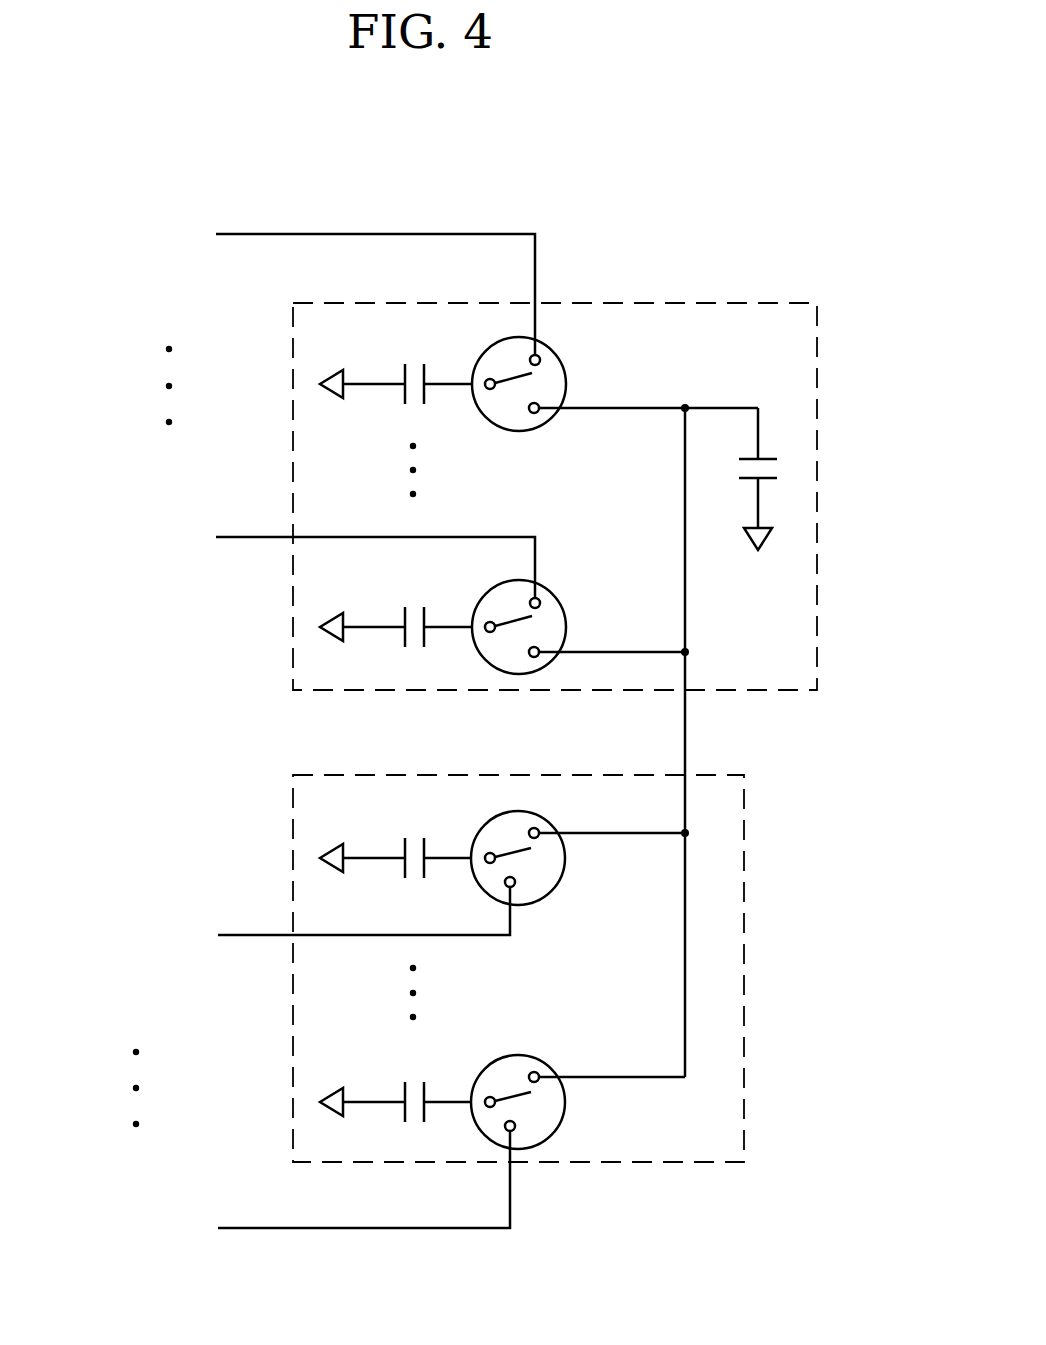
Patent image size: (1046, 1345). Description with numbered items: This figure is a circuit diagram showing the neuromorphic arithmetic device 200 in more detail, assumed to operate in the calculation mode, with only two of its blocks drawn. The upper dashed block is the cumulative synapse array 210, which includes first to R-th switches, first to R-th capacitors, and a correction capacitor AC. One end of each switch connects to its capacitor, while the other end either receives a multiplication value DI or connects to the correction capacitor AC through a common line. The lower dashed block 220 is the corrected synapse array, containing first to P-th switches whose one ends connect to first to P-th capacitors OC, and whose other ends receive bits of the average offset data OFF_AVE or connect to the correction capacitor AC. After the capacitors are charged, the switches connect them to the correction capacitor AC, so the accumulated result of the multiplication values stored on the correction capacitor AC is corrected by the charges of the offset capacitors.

The neuromorphic arithmetic device 200 is at (850, 182).
The cumulative synapse array 210 is at (713, 302).
The offset switch block 220 is at (598, 775).